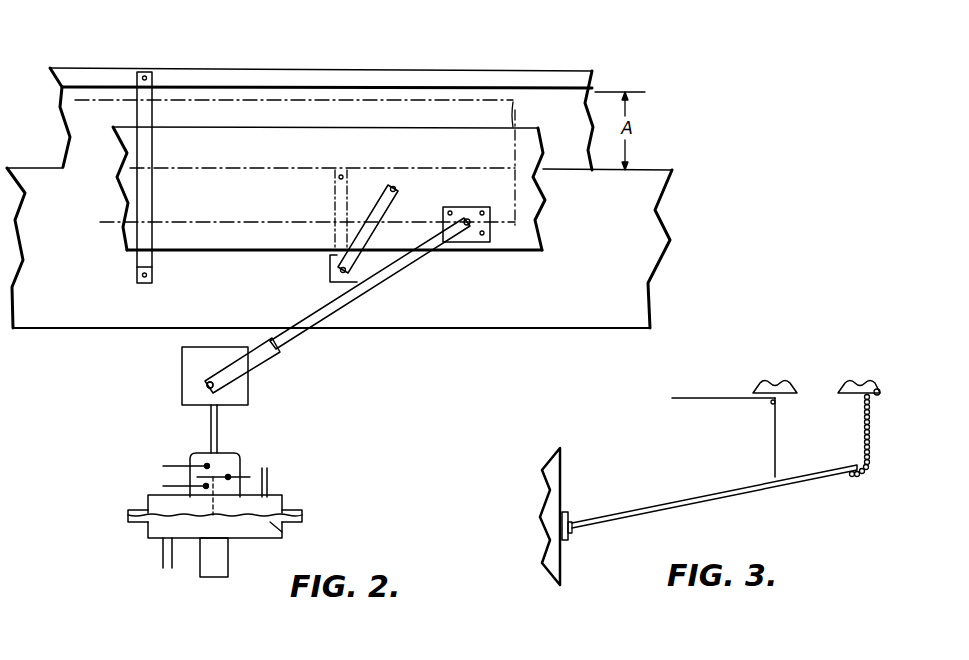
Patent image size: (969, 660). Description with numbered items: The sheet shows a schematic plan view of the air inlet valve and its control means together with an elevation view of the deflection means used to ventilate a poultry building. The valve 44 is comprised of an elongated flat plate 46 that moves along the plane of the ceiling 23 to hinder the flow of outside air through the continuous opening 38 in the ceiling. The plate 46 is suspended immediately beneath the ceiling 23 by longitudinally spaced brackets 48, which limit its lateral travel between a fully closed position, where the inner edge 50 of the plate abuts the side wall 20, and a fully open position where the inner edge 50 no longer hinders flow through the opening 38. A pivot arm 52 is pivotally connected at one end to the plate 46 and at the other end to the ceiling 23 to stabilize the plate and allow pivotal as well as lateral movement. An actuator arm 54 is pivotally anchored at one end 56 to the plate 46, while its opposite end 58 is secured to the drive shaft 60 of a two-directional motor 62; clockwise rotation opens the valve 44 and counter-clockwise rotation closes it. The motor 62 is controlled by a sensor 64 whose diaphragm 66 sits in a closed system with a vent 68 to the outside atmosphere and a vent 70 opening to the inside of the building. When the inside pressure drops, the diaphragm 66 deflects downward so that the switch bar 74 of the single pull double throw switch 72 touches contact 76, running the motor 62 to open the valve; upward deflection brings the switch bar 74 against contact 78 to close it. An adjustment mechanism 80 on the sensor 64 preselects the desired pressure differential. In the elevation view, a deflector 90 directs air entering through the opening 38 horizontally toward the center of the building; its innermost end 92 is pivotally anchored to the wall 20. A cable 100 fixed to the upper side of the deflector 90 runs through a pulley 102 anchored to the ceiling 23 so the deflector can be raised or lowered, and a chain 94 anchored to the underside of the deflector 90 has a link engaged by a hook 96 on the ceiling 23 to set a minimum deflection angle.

In FIG. 2, the side wall 20 is at (593, 82).
In FIG. 2, the ceiling 23 is at (650, 237).
In FIG. 3, the ceiling 23 is at (780, 382).
In FIG. 2, the opening 38 is at (95, 86).
In FIG. 2, the valve 44 is at (505, 260).
In FIG. 2, the flat plate 46 is at (539, 237).
In FIG. 2, the brackets 48 is at (143, 93).
In FIG. 2, the inner edge 50 is at (517, 130).
In FIG. 2, the pivot arm 52 is at (397, 205).
In FIG. 2, the actuator arm 54 is at (380, 278).
In FIG. 2, the end of actuator arm 56 is at (473, 228).
In FIG. 2, the opposite end of actuator arm 58 is at (227, 373).
In FIG. 2, the drive shaft 60 is at (207, 386).
In FIG. 2, the motor 62 is at (185, 355).
In FIG. 2, the sensor 64 is at (292, 512).
In FIG. 2, the diaphragm 66 is at (287, 528).
In FIG. 2, the vent 68 is at (268, 477).
In FIG. 2, the vent 70 is at (163, 553).
In FIG. 2, the single pull double throw switch 72 is at (240, 453).
In FIG. 2, the switch bar 74 is at (218, 477).
In FIG. 2, the contact 76 is at (204, 488).
In FIG. 2, the contact 78 is at (207, 464).
In FIG. 2, the adjustment mechanism 80 is at (228, 558).
In FIG. 3, the deflector 90 is at (740, 488).
In FIG. 3, the innermost end 92 is at (580, 515).
In FIG. 3, the chain 94 is at (865, 428).
In FIG. 3, the hook 96 is at (880, 390).
In FIG. 3, the cable 100 is at (777, 439).
In FIG. 3, the pulley 102 is at (760, 407).